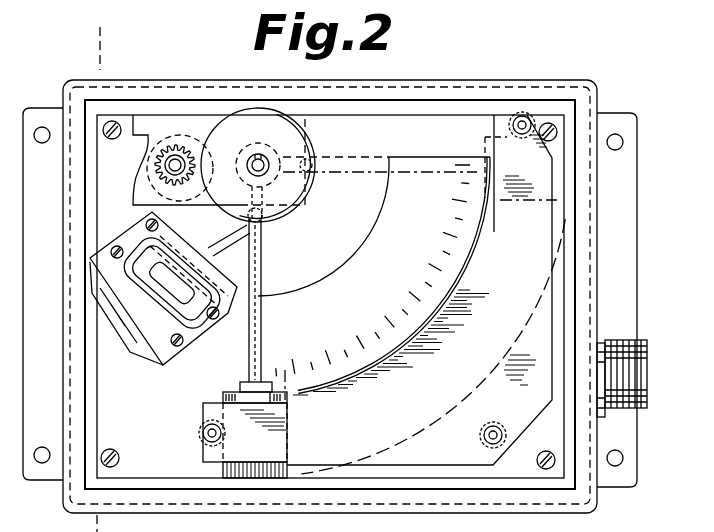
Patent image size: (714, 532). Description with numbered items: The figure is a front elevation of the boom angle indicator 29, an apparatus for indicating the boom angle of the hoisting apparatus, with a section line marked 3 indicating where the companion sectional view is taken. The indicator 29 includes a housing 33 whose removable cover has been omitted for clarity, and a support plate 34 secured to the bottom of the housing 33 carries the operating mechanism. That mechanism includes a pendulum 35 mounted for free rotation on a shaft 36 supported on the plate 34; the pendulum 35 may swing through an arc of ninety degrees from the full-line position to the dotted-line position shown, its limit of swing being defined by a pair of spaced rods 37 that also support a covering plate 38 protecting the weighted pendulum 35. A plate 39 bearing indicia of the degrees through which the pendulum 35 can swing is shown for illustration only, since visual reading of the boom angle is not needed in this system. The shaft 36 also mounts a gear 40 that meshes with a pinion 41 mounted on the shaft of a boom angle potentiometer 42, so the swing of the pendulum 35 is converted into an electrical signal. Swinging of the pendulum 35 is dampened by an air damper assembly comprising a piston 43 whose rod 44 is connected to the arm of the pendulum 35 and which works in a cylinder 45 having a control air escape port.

The section line for FIG. 3 is at (91, 49).
The boom angle indicator 29 is at (604, 518).
The housing 33 is at (585, 103).
The support plate 34 is at (133, 424).
The pendulum 35 is at (226, 398).
The shaft 36 is at (262, 163).
The spaced rods 37 is at (523, 122).
The covering plate 38 is at (497, 405).
The plate bearing indicia 39 is at (362, 282).
The gear 40 is at (268, 108).
The pinion 41 is at (186, 152).
The boom angle potentiometer 42 is at (147, 152).
The piston 43 is at (153, 320).
The rod 44 is at (263, 241).
The cylinder 45 is at (190, 302).